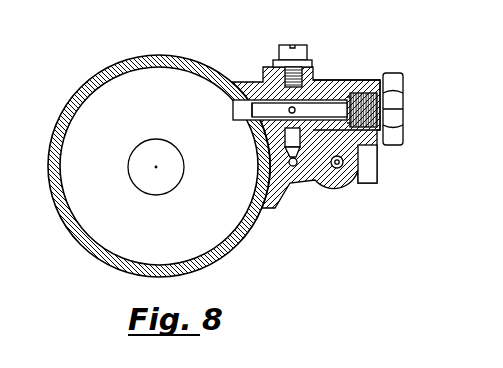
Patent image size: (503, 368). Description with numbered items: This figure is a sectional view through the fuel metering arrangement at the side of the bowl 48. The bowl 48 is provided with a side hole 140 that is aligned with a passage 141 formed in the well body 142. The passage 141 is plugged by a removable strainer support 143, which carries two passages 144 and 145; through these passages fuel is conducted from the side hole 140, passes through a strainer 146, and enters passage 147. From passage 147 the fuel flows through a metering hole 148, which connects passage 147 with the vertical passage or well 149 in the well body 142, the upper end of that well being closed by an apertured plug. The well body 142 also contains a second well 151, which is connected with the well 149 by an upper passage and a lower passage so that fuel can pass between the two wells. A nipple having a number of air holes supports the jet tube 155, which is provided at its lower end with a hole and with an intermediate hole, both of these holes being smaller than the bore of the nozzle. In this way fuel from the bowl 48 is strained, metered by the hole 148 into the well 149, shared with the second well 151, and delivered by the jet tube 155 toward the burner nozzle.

The bowl 48 is at (72, 227).
The side hole 140 is at (243, 108).
The passage 141 is at (252, 83).
The well body 142 is at (340, 80).
The removable strainer support 143 is at (393, 110).
The passage 144 is at (240, 122).
The passage 145 is at (262, 142).
The strainer 146 is at (313, 100).
The passage 147 is at (287, 167).
The metering hole 148 is at (295, 158).
The vertical passage or well 149 is at (291, 164).
The second well 151 is at (342, 163).
The jet tube 155 is at (338, 165).